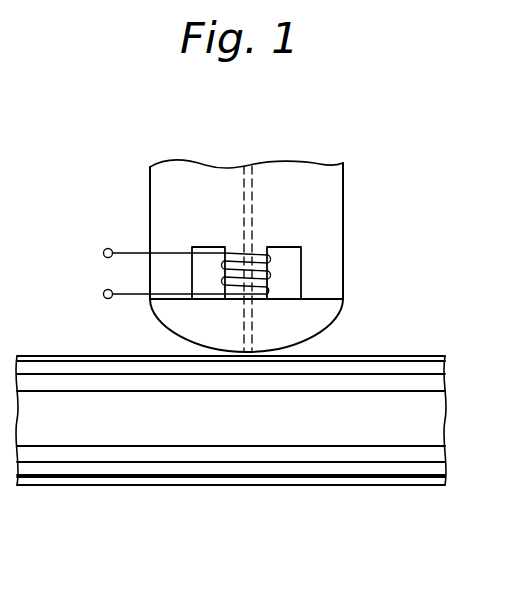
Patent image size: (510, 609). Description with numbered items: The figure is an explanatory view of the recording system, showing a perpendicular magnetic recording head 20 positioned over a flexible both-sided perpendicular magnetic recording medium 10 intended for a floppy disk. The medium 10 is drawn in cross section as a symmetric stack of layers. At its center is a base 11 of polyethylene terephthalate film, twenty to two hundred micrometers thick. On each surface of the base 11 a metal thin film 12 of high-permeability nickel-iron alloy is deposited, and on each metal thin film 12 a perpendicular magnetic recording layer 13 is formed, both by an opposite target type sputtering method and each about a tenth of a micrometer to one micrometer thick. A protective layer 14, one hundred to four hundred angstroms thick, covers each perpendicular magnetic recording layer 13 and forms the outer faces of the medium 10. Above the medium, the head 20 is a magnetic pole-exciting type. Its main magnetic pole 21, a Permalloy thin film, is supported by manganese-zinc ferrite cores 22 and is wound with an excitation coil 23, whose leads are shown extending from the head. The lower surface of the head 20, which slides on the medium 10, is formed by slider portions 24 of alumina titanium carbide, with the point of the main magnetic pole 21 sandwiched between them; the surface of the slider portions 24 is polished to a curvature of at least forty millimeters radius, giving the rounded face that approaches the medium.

The perpendicular magnetic recording medium 10 is at (230, 495).
The base 11 is at (445, 418).
The metal thin film 12 is at (445, 383).
The perpendicular magnetic recording layer 13 is at (445, 367).
The protective layer 14 is at (445, 356).
The perpendicular magnetic recording head 20 is at (314, 154).
The main magnetic pole 21 is at (245, 190).
The ferrite core 22 is at (315, 205).
The excitation coil 23 is at (272, 277).
The slider portion 24 is at (308, 314).